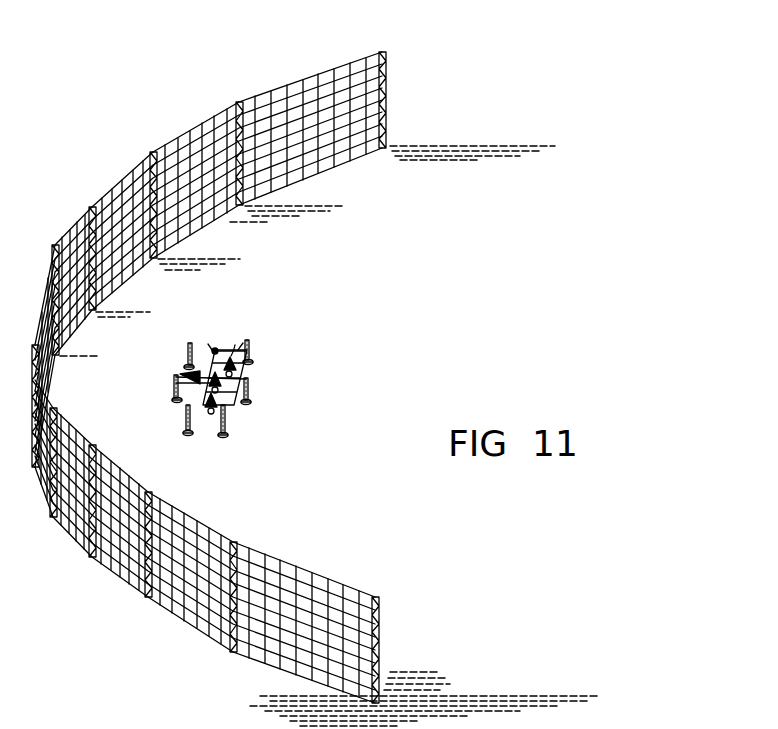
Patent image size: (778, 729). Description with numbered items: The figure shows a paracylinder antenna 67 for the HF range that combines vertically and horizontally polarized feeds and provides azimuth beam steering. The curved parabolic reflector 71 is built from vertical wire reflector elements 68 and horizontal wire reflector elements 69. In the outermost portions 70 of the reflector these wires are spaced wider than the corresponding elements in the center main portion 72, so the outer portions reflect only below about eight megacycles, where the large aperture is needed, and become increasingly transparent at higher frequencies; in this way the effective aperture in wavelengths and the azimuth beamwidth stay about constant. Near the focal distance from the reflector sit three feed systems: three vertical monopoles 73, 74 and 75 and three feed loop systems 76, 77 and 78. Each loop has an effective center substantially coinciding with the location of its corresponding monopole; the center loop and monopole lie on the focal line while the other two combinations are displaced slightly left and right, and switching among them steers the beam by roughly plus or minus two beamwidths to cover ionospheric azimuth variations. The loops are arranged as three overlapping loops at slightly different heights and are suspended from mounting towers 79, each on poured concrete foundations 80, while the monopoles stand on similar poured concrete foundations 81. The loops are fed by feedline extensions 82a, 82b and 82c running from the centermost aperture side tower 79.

The paracylinder antenna 67 is at (362, 238).
The vertical wire reflector elements 68 is at (343, 153).
The horizontal wire reflector elements 69 is at (312, 106).
The outermost portions 70 is at (348, 59).
The parabolic reflector 71 is at (126, 179).
The center main portion 72 is at (125, 268).
The vertical monopole 73 is at (203, 412).
The vertical monopole 74 is at (200, 383).
The vertical monopole 75 is at (235, 345).
The feed loop system 76 is at (198, 392).
The feed loop system 77 is at (208, 344).
The feed loop system 78 is at (243, 343).
The mounting towers 79 is at (188, 343).
The poured concrete foundations 80 is at (185, 365).
The poured concrete foundations 81 is at (211, 414).
The feedline extension 82a is at (218, 403).
The feedline extension 82b is at (222, 382).
The feedline extension 82c is at (237, 364).